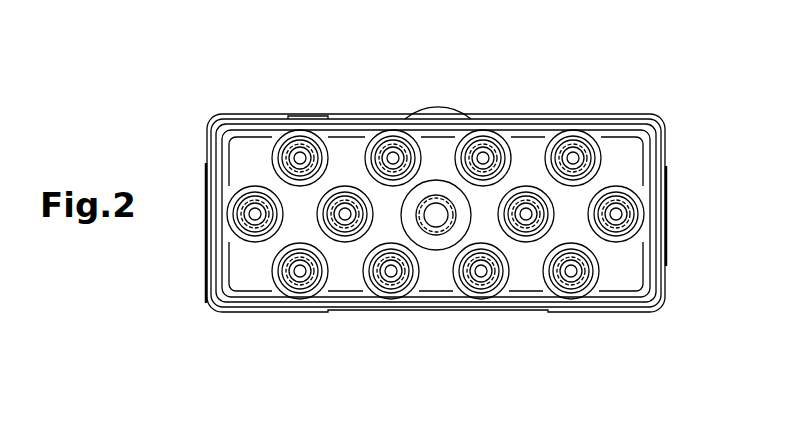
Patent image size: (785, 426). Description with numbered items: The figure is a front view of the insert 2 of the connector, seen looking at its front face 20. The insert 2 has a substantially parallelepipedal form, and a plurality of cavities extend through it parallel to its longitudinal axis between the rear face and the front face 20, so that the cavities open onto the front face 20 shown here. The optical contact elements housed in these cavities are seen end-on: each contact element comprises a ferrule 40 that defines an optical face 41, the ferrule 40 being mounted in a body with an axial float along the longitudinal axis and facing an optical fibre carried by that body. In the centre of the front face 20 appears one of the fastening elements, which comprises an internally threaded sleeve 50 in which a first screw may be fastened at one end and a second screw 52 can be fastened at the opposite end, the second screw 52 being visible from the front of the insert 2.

The insert 2 is at (621, 82).
The front face 20 is at (563, 266).
The ferrule 40 is at (385, 150).
The optical face 41 is at (475, 150).
The internally threaded sleeve 50 is at (432, 178).
The second screw 52 is at (428, 212).